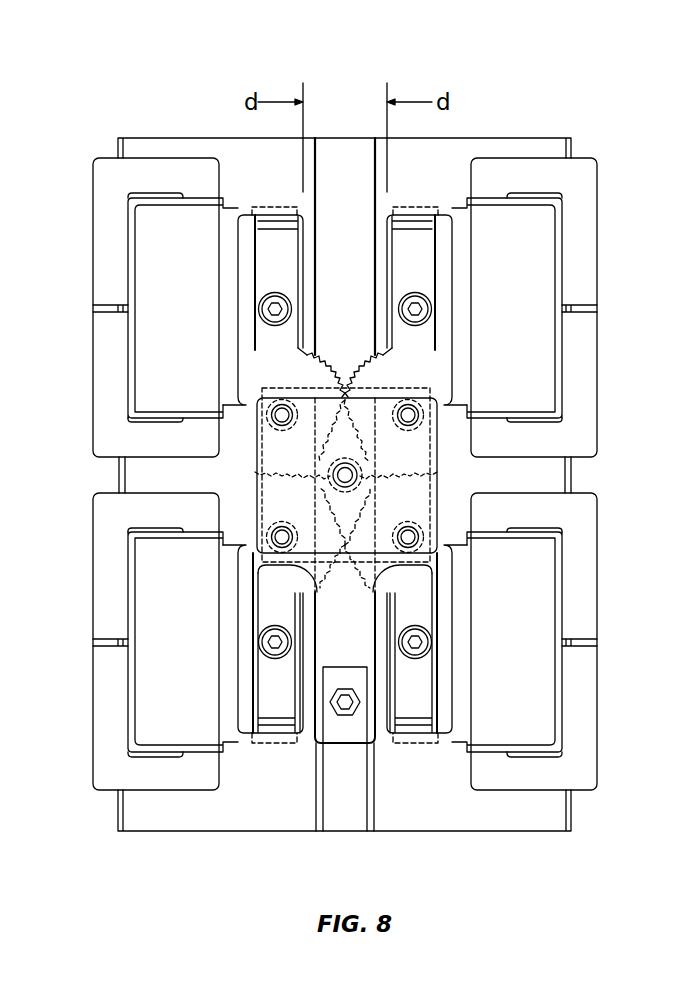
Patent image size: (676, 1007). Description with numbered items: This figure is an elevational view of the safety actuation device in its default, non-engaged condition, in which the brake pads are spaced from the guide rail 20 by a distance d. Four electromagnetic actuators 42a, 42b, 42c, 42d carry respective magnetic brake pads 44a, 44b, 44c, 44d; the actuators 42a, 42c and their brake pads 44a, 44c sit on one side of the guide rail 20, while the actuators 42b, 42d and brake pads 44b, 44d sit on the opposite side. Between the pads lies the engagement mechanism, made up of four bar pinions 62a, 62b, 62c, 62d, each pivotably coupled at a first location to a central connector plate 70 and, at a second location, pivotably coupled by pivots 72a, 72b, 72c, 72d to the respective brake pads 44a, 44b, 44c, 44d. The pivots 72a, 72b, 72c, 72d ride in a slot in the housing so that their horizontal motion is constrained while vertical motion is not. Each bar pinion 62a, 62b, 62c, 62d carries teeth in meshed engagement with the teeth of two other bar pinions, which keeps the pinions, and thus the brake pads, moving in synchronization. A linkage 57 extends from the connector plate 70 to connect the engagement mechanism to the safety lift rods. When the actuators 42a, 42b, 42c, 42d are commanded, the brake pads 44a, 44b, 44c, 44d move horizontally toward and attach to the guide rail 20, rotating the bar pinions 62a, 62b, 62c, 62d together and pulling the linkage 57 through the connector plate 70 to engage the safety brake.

The guide rail 20 is at (342, 178).
The electromagnetic actuator 42a is at (114, 224).
The electromagnetic actuator 42b is at (585, 179).
The electromagnetic actuator 42c is at (114, 516).
The electromagnetic actuator 42d is at (587, 526).
The magnetic brake pad 44a is at (300, 330).
The magnetic brake pad 44b is at (390, 334).
The magnetic brake pad 44c is at (255, 678).
The magnetic brake pad 44d is at (390, 622).
The bar pinion 62a is at (280, 357).
The bar pinion 62b is at (418, 365).
The bar pinion 62c is at (272, 582).
The bar pinion 62d is at (420, 610).
The connector plate 70 is at (417, 485).
The pivot 72a is at (275, 307).
The pivot 72b is at (415, 307).
The pivot 72c is at (275, 642).
The pivot 72d is at (417, 645).
The linkage 57 is at (357, 802).